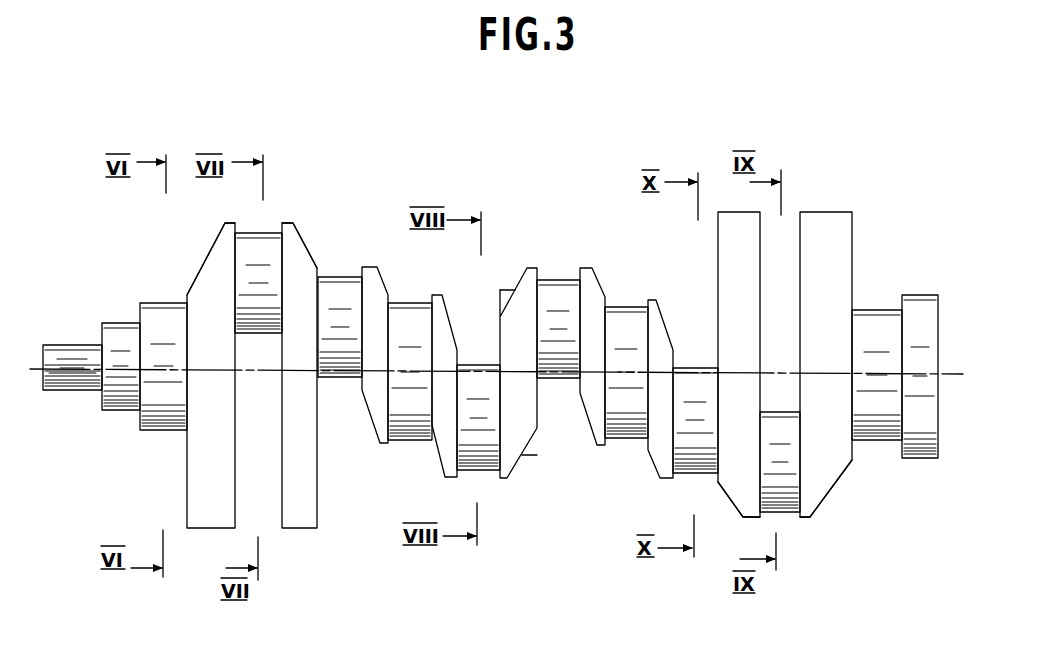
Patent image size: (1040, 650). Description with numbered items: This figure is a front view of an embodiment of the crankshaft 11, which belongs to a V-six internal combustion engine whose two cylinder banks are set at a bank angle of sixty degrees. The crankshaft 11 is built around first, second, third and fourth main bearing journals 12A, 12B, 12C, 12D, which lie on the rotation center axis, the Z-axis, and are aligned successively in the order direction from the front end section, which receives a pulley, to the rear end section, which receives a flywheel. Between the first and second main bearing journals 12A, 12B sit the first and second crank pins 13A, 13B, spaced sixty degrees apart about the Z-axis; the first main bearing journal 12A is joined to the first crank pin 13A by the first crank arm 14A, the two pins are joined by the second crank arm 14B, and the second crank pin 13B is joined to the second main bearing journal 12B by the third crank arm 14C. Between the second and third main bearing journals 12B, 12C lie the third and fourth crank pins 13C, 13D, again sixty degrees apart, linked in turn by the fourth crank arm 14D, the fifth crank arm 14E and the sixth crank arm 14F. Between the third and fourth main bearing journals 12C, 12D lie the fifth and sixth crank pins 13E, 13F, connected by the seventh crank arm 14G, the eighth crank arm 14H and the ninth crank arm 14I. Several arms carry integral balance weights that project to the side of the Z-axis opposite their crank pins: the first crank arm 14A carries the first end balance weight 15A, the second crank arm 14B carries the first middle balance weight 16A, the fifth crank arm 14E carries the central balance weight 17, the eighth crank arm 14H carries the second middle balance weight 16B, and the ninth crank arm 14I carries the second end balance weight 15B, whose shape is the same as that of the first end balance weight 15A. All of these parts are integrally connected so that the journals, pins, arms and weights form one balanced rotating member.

The crankshaft 11 is at (543, 252).
The first main bearing journal 12A is at (161, 303).
The second main bearing journal 12B is at (410, 303).
The third main bearing journal 12C is at (629, 307).
The fourth main bearing journal 12D is at (878, 310).
The first crank pin 13A is at (256, 233).
The second crank pin 13B is at (341, 277).
The third crank pin 13C is at (472, 470).
The fourth crank pin 13D is at (555, 378).
The fifth crank pin 13E is at (691, 368).
The sixth crank pin 13F is at (774, 412).
The first crank arm 14A is at (212, 253).
The second crank arm 14B is at (304, 241).
The third crank arm 14C is at (363, 400).
The fourth crank arm 14D is at (430, 455).
The fifth crank arm 14E is at (522, 460).
The sixth crank arm 14F is at (586, 268).
The seventh crank arm 14G is at (651, 465).
The eighth crank arm 14H is at (732, 507).
The ninth crank arm 14I is at (826, 490).
The first end balance weight 15A is at (201, 528).
The second end balance weight 15B is at (832, 212).
The first middle balance weight 16A is at (309, 528).
The second middle balance weight 16B is at (740, 212).
The central balance weight 17 is at (503, 290).